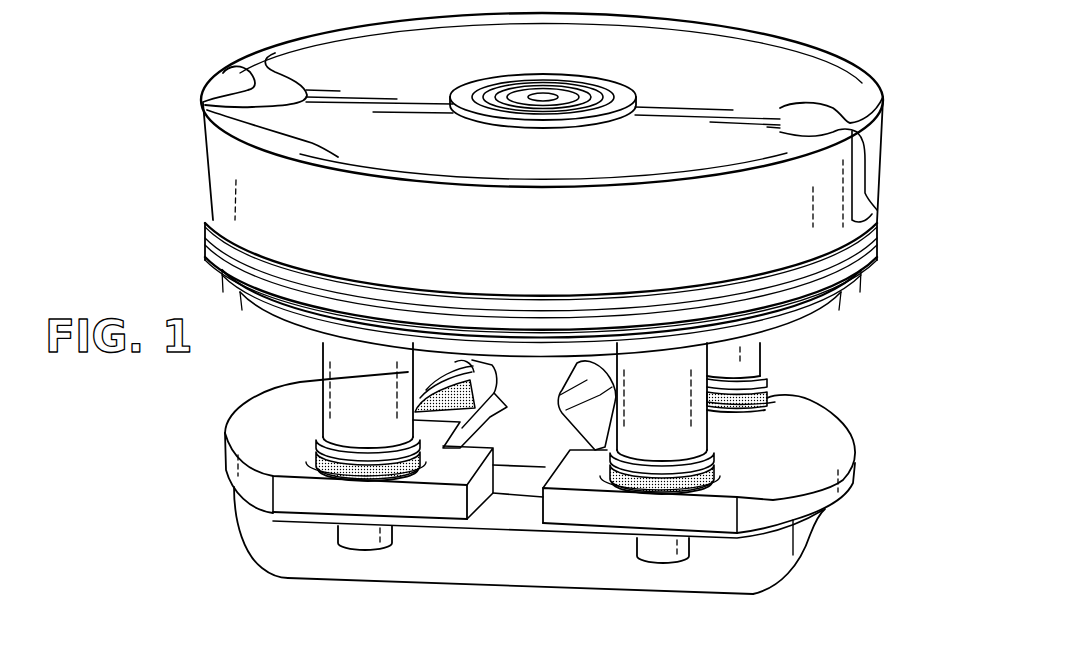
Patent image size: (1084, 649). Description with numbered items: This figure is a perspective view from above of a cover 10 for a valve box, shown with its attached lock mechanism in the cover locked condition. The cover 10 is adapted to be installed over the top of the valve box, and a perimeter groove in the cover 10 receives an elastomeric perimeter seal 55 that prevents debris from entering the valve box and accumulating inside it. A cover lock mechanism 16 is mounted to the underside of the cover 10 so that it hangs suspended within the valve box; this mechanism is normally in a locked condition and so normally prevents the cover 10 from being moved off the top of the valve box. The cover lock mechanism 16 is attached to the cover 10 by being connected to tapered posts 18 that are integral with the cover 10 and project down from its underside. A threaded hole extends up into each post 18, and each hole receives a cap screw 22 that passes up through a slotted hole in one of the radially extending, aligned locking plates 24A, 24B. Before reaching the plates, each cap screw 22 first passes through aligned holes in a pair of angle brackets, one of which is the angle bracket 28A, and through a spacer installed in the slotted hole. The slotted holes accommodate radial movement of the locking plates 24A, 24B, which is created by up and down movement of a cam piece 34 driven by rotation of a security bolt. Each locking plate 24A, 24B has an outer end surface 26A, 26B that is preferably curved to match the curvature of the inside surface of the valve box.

The cover 10 is at (352, 72).
The elastomeric perimeter seal 55 is at (877, 223).
The tapered posts 18 is at (420, 380).
The cam piece 34 is at (541, 433).
The locking plate 24A is at (309, 452).
The locking plate 24B is at (749, 516).
The outer end surface 26A is at (223, 456).
The outer end surface 26B is at (855, 462).
The cover lock mechanism 16 is at (567, 561).
The angle bracket 28A is at (464, 560).
The cap screw 22 is at (361, 543).